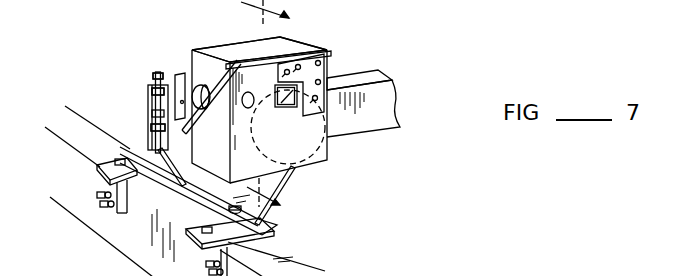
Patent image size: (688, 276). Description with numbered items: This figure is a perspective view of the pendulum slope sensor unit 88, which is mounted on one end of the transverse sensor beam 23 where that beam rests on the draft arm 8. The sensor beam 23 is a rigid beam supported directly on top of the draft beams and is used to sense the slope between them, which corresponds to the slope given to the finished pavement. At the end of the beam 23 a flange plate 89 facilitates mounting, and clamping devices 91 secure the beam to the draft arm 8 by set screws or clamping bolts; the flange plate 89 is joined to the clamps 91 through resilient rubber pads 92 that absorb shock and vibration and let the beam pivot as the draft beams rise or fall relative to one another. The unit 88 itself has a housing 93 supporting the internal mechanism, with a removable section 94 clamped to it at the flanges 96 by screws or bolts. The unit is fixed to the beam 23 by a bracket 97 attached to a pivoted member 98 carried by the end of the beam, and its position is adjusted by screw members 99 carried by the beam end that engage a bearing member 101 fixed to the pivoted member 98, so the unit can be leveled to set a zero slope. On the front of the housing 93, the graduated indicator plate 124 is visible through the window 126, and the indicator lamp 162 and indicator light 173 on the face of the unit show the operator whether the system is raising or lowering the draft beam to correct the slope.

The draft arm 8 is at (266, 114).
The sensor beam 23 is at (388, 105).
The pendulum slope sensor unit 88 is at (291, 100).
The flange plate 89 is at (280, 189).
The clamping device 91 is at (129, 187).
The resilient rubber pad 92 is at (272, 224).
The housing 93 is at (219, 168).
The removable section 94 is at (232, 48).
The flange 96 is at (322, 52).
The bracket 97 is at (183, 75).
The pivoted member 98 is at (160, 72).
The screw member 99 is at (156, 78).
The bearing member 101 is at (156, 118).
The indicator plate 124 is at (319, 169).
The window 126 is at (284, 108).
The indicator lamp 162 is at (321, 63).
The indicator light 173 is at (325, 72).